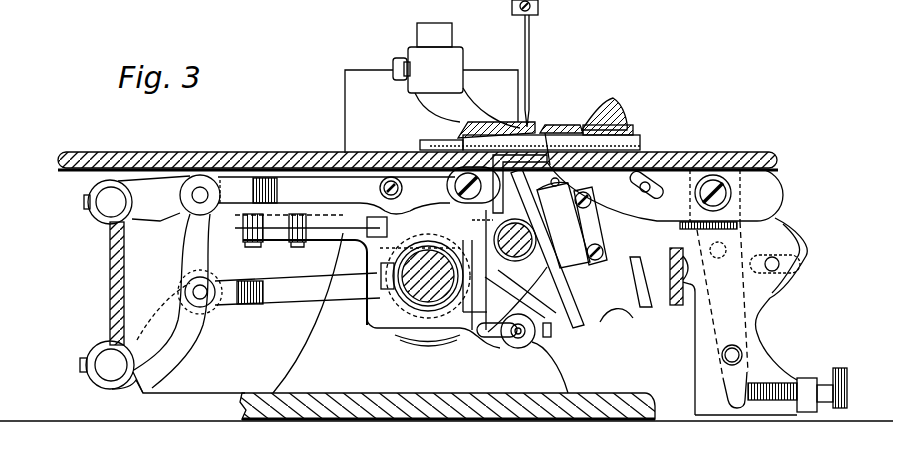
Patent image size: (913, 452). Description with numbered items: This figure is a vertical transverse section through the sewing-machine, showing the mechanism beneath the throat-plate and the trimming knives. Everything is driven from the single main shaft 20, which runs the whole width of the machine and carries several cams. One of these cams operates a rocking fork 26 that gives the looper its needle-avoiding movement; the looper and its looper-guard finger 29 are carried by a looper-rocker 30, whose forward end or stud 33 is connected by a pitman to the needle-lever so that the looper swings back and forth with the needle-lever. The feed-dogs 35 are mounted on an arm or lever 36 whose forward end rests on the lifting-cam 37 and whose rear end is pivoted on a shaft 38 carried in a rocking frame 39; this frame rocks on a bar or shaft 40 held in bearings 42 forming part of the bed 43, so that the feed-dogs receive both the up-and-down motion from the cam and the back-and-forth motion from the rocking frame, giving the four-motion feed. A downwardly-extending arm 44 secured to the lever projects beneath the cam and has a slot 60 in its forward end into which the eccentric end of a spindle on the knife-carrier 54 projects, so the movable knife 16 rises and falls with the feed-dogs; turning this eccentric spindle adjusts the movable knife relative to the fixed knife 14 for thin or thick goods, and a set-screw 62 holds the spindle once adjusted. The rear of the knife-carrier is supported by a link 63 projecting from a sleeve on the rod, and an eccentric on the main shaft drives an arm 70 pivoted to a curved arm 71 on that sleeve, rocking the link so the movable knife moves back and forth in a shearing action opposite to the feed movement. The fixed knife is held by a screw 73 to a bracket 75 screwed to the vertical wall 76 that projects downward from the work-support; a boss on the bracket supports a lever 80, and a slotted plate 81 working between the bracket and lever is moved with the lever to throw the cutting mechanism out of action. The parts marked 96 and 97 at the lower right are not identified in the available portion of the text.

The fixed knife 14 is at (617, 137).
The movable knife 16 is at (540, 172).
The main shaft 20 is at (377, 300).
The rocking fork 26 is at (552, 152).
The looper-guard finger 29 is at (600, 223).
The looper-rocker 30 is at (615, 155).
The stud 33 is at (614, 245).
The feed-dogs 35 is at (483, 147).
The arm or lever 36 is at (400, 220).
The lifting-cam 37 is at (383, 252).
The shaft 38 is at (97, 200).
The rocking frame 39 is at (110, 279).
The bar or shaft 40 is at (103, 373).
The bearings 42 is at (93, 393).
The bed 43 is at (213, 406).
The downwardly-extending arm 44 is at (377, 325).
The knife-carrier 54 is at (297, 173).
The slot 60 is at (487, 336).
The set-screw 62 is at (548, 336).
The link 63 is at (190, 257).
The arm 70 is at (262, 300).
The curved arm 71 is at (197, 330).
The screw 73 is at (728, 193).
The bracket 75 is at (700, 340).
The vertical wall 76 is at (677, 308).
The lever 80 is at (732, 323).
The plate 81 is at (807, 242).
The adjusting screw 96 is at (803, 382).
The knurled knob 97 is at (847, 383).